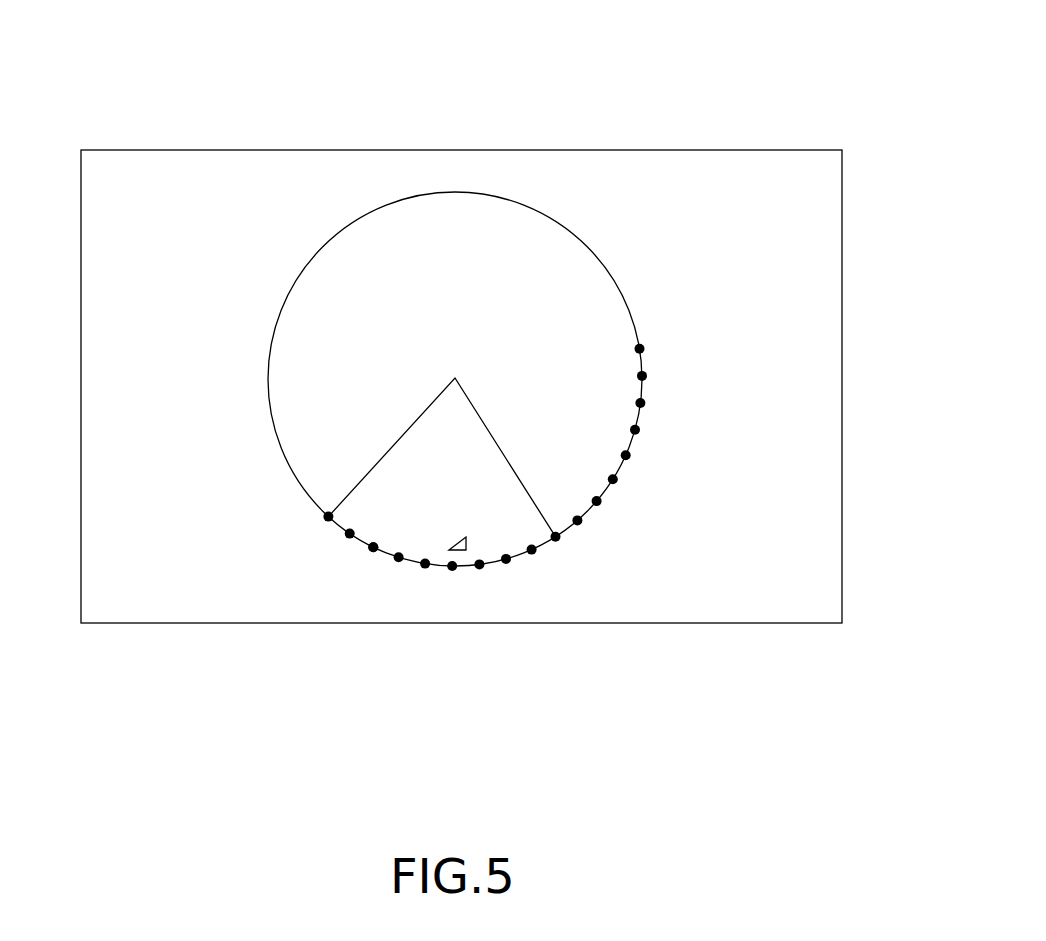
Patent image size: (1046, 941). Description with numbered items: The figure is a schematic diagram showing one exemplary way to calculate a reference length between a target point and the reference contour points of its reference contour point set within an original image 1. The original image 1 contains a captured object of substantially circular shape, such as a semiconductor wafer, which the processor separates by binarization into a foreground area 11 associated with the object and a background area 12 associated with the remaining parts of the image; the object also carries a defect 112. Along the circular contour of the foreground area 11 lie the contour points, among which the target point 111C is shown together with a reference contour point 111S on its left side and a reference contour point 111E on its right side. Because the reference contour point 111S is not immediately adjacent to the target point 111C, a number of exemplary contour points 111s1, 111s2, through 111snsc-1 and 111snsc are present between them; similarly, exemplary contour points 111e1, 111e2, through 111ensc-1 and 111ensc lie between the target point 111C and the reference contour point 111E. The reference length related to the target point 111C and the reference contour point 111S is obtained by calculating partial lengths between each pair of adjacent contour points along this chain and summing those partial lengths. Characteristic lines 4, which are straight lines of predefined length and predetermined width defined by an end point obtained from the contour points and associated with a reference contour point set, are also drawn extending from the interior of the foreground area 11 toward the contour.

The original image 1 is at (505, 113).
The background area 12 is at (763, 160).
The foreground area 11 is at (557, 258).
The characteristic line 4 is at (362, 473).
The defect 112 is at (462, 536).
The reference contour point 111S is at (324, 519).
The contour point 111s1 is at (345, 537).
The contour point 111s2 is at (370, 554).
The contour point 111snsc-1 is at (505, 563).
The contour point 111snsc is at (532, 553).
The target point 111C is at (556, 541).
The contour point 111ensc is at (579, 524).
The contour point 111ensc-1 is at (598, 503).
The contour point 111e2 is at (643, 406).
The contour point 111e1 is at (645, 377).
The reference contour point 111E is at (643, 349).